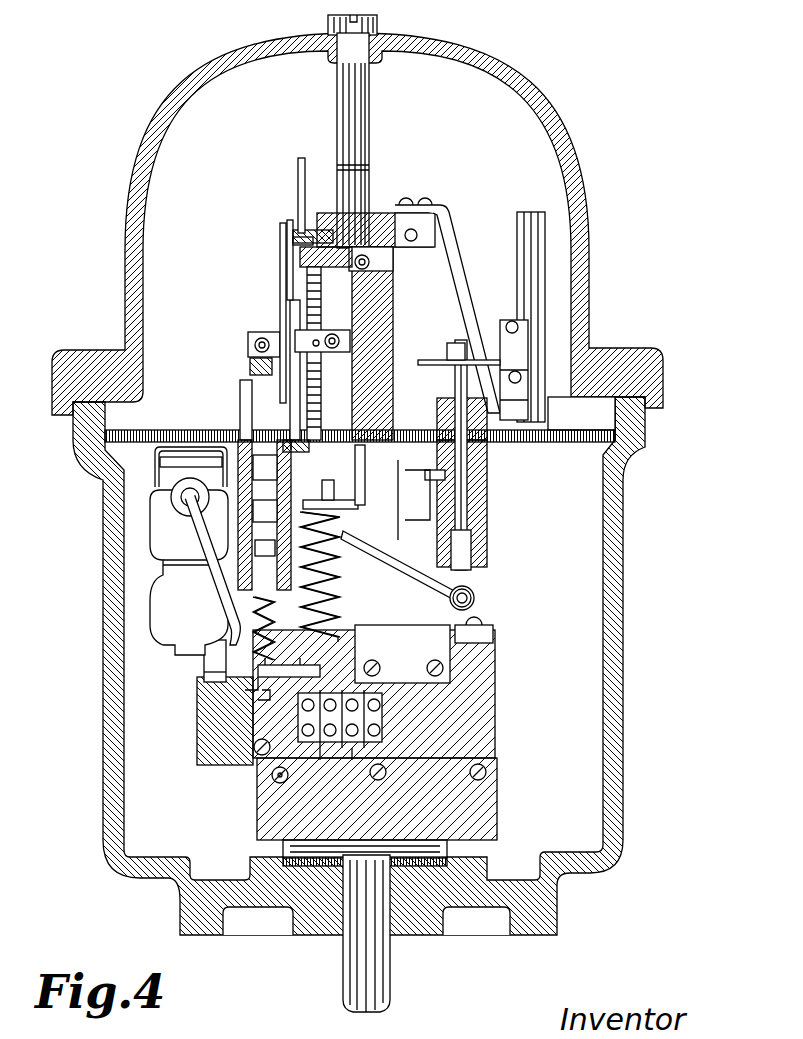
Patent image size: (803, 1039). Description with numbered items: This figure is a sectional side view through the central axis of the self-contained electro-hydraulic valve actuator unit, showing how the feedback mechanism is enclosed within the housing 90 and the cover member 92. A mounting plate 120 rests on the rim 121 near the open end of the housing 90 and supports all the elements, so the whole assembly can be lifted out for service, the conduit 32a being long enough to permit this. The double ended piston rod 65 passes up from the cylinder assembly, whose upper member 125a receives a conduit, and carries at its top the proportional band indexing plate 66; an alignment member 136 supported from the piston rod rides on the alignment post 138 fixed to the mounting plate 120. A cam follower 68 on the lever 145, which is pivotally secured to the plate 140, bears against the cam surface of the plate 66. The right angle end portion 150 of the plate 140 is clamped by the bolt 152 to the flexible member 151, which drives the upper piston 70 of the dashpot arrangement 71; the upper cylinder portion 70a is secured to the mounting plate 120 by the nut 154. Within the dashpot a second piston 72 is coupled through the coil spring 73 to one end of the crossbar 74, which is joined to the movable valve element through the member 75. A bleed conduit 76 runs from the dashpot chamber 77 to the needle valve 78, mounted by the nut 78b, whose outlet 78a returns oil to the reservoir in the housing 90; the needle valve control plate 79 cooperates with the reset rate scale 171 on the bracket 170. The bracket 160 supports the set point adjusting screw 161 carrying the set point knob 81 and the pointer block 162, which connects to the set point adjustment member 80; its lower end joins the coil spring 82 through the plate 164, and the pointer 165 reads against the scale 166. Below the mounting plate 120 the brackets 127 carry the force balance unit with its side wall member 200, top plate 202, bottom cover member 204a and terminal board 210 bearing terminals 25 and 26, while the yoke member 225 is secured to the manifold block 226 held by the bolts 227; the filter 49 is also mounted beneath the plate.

The terminal 25 is at (320, 750).
The terminal 26 is at (352, 750).
The conduit 32a is at (226, 592).
The filter 49 is at (174, 588).
The piston rod 65 is at (388, 963).
The proportional band indexing plate 66 is at (318, 156).
The cam follower 68 is at (292, 240).
The piston 70 is at (248, 430).
The cylinder 70a is at (295, 470).
The dashpot arrangement 71 is at (296, 456).
The piston 72 is at (270, 600).
The coil spring 73 is at (258, 645).
The crossbar 74 is at (265, 664).
The member 75 is at (270, 692).
The bleed conduit 76 is at (428, 590).
The dashpot chamber 77 is at (264, 515).
The needle valve 78 is at (468, 508).
The outlet 78a is at (472, 492).
The nut 78b is at (437, 412).
The needle valve control plate 79 is at (433, 360).
The set point adjustment member 80 is at (362, 472).
The set point knob 81 is at (296, 230).
The coil spring 82 is at (334, 572).
The housing 90 is at (624, 606).
The cover member 92 is at (576, 207).
The mounting plate 120 is at (158, 430).
The rim 121 is at (612, 445).
The upper member 125a is at (416, 500).
The brackets 127 is at (474, 610).
The alignment member 136 is at (457, 268).
The alignment post 138 is at (520, 223).
The plate 140 is at (280, 298).
The lever 145 is at (287, 248).
The right angle end portion 150 is at (258, 330).
The flexible member 151 is at (250, 366).
The bolt 152 is at (250, 345).
The nut 154 is at (250, 400).
The bracket 160 is at (383, 303).
The set point adjusting screw 161 is at (307, 280).
The pointer block 162 is at (370, 262).
The plate 164 is at (420, 488).
The pointer 165 is at (370, 192).
The scale 166 is at (380, 392).
The bracket 170 is at (520, 400).
The reset rate scale 171 is at (500, 340).
The side wall member 200 is at (490, 700).
The top plate 202 is at (492, 638).
The bottom cover member 204a is at (490, 805).
The terminal board 210 is at (384, 715).
The yoke member 225 is at (272, 778).
The manifold block 226 is at (200, 702).
The bolts 227 is at (254, 752).